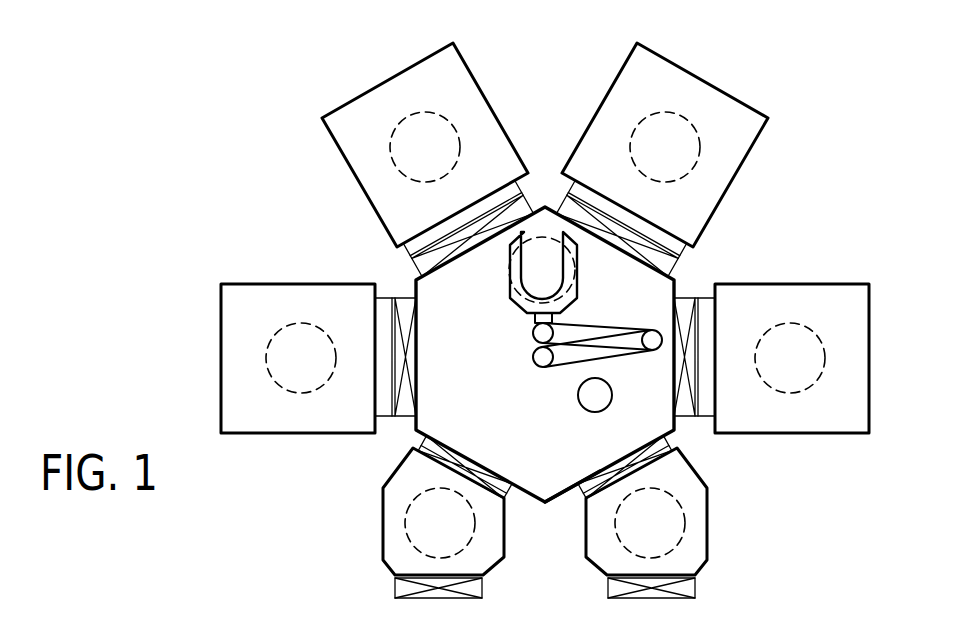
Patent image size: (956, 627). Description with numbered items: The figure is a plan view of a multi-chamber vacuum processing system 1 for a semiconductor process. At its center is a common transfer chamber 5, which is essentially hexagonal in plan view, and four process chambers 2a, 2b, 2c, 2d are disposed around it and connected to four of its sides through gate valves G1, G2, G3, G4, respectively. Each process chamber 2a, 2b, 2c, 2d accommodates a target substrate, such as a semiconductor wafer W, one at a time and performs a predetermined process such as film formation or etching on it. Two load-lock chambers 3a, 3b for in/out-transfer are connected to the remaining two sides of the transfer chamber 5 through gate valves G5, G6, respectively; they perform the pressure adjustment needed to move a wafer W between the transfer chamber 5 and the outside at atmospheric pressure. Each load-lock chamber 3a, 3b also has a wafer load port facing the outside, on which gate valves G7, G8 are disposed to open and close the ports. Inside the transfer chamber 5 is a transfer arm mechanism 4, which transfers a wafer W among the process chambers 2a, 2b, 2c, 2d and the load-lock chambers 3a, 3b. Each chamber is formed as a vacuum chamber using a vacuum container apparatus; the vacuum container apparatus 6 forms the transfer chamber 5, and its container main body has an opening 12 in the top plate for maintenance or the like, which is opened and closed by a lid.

The vacuum processing system 1 is at (792, 183).
The process chamber 2a is at (830, 284).
The process chamber 2b is at (737, 98).
The process chamber 2c is at (338, 147).
The process chamber 2d is at (221, 372).
The load-lock chamber 3a is at (708, 545).
The load-lock chamber 3b is at (383, 548).
The transfer arm mechanism 4 is at (520, 340).
The transfer chamber 5 is at (421, 430).
The vacuum container apparatus 6 is at (564, 500).
The opening 12 is at (583, 411).
The semiconductor wafer W is at (578, 290).
The gate valve G1 is at (688, 424).
The gate valve G2 is at (665, 268).
The gate valve G3 is at (545, 203).
The gate valve G4 is at (405, 295).
The gate valve G5 is at (672, 447).
The gate valve G6 is at (509, 497).
The gate valve G7 is at (697, 588).
The gate valve G8 is at (397, 590).